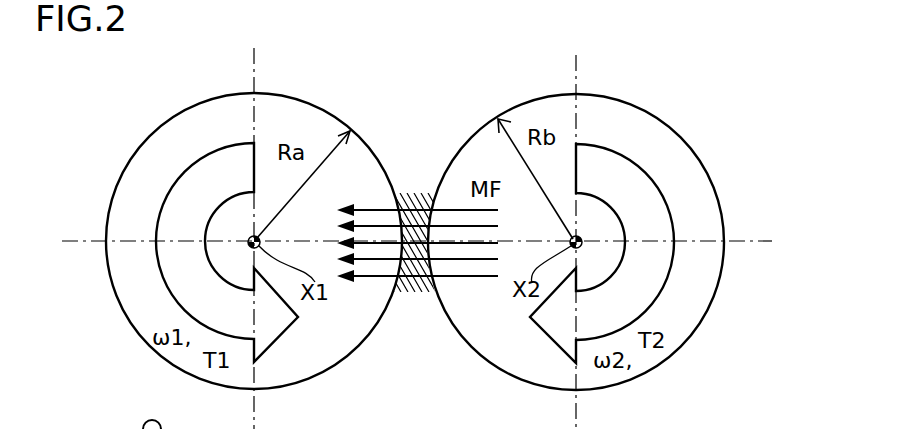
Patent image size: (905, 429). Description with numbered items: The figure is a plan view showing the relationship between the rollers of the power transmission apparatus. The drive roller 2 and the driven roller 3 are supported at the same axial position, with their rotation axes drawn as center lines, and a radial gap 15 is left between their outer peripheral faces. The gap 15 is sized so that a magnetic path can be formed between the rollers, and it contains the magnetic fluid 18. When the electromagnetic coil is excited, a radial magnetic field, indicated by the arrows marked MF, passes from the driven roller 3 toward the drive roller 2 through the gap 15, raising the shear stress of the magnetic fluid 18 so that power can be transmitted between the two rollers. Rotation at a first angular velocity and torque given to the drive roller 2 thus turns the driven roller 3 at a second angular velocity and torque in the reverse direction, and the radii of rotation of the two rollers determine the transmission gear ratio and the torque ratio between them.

The drive roller 2 is at (186, 126).
The driven roller 3 is at (650, 137).
The gap 15 is at (414, 306).
The magnetic fluid 18 is at (413, 193).